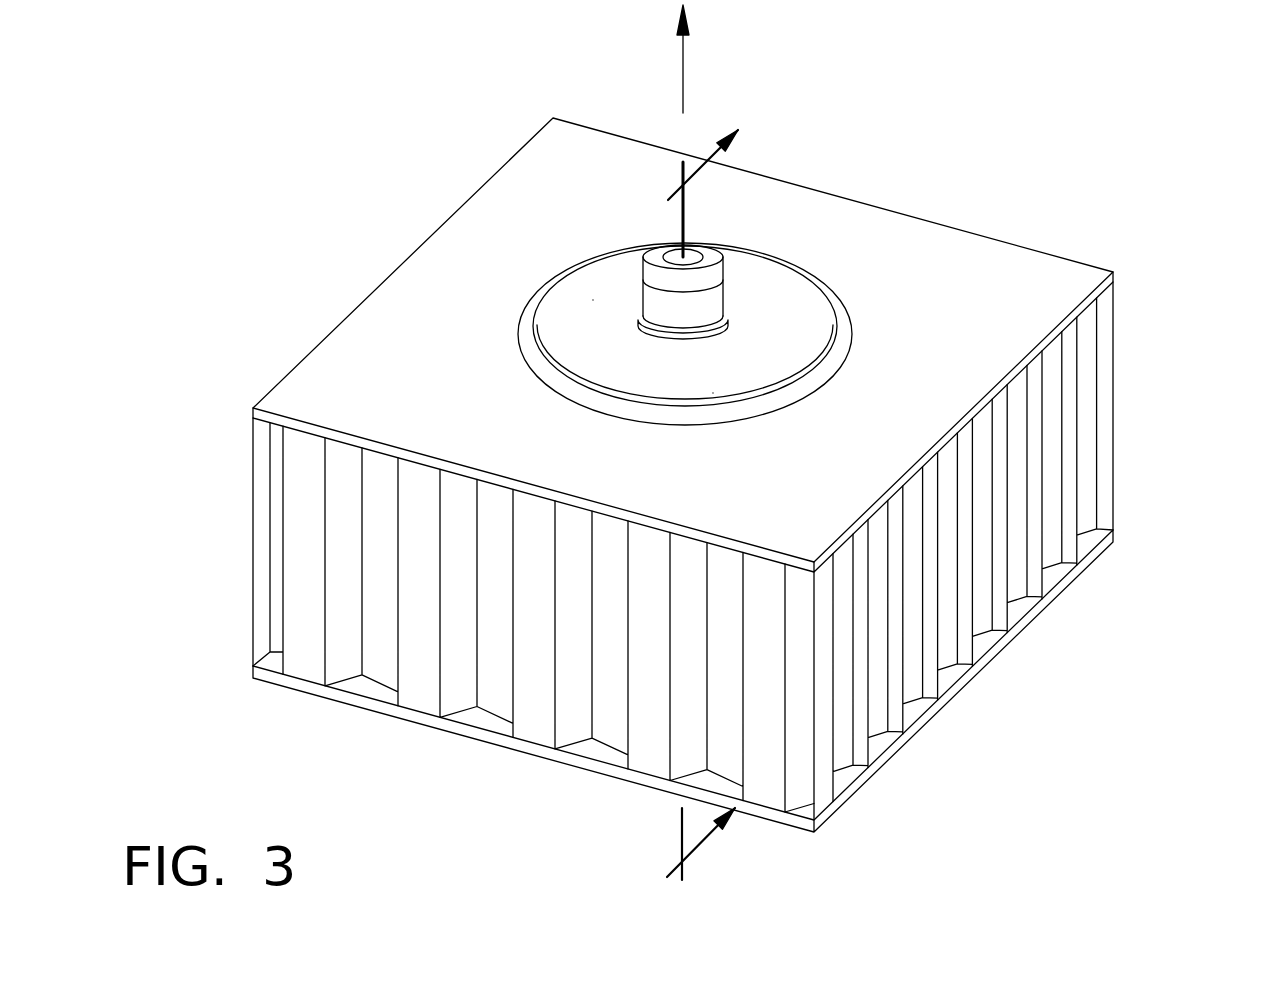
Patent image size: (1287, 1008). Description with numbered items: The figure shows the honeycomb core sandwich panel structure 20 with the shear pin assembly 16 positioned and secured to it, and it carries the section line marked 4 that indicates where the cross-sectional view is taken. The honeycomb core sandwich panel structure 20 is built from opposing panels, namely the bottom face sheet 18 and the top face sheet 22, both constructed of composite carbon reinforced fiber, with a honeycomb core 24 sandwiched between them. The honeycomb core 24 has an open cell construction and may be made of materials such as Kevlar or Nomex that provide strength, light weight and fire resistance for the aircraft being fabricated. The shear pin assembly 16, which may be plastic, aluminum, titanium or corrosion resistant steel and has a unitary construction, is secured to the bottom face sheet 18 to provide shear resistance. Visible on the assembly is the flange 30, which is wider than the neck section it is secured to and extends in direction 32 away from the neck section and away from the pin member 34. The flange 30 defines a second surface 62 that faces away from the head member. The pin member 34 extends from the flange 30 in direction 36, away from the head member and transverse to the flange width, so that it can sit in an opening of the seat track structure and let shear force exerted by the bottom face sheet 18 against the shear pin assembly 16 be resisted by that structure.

The section line 4- 4 is at (702, 466).
The shear pin assembly 16 is at (792, 217).
The bottom face sheet 18 is at (355, 382).
The honeycomb core sandwich panel structure 20 is at (1130, 368).
The top face sheet 22 is at (503, 747).
The honeycomb core 24 is at (545, 625).
The flange 30 is at (787, 348).
The direction 32 is at (713, 393).
The pin member 34 is at (705, 303).
The direction 36 is at (683, 65).
The second surface 62 is at (593, 300).